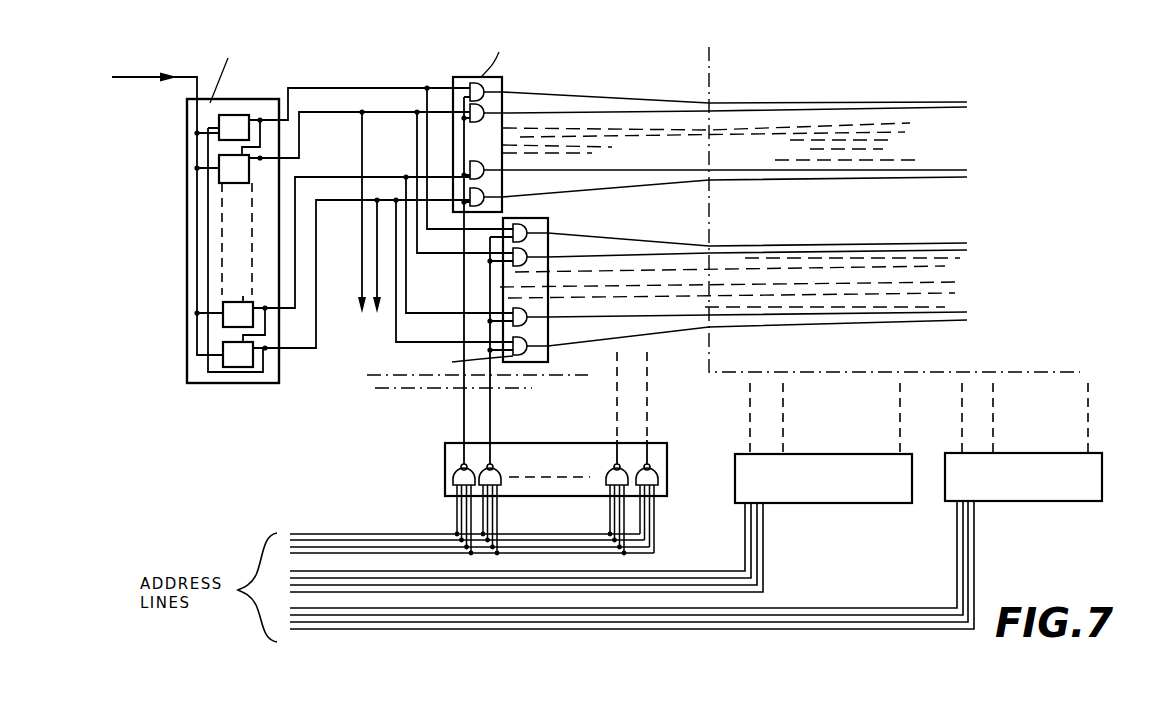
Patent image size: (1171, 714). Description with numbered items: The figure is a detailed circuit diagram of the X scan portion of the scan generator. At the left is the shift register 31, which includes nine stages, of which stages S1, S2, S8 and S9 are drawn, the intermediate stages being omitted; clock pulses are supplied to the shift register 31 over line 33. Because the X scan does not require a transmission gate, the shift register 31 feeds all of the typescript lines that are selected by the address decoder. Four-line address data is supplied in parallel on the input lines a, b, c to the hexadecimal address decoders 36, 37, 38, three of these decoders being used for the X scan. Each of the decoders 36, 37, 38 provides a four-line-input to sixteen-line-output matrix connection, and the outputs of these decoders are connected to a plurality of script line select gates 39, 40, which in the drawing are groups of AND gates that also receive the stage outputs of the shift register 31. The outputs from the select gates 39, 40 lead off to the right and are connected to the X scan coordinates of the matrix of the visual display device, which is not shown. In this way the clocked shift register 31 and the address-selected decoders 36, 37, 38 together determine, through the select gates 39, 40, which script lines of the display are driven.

The shift register 31 is at (187, 237).
The clock line 33 is at (143, 77).
The shift register stage S1 is at (237, 118).
The shift register stage S2 is at (232, 173).
The shift register stage S8 is at (230, 320).
The shift register stage S9 is at (230, 358).
The hexadecimal address decoder 36 is at (542, 443).
The hexadecimal address decoder 37 is at (838, 454).
The hexadecimal address decoder 38 is at (1034, 453).
The script line select gates 39 is at (505, 80).
The script line select gates 40 is at (548, 225).
The input line a is at (462, 548).
The input line b is at (516, 552).
The input line c is at (622, 571).